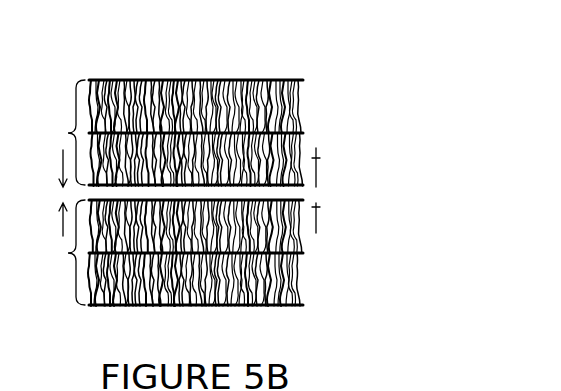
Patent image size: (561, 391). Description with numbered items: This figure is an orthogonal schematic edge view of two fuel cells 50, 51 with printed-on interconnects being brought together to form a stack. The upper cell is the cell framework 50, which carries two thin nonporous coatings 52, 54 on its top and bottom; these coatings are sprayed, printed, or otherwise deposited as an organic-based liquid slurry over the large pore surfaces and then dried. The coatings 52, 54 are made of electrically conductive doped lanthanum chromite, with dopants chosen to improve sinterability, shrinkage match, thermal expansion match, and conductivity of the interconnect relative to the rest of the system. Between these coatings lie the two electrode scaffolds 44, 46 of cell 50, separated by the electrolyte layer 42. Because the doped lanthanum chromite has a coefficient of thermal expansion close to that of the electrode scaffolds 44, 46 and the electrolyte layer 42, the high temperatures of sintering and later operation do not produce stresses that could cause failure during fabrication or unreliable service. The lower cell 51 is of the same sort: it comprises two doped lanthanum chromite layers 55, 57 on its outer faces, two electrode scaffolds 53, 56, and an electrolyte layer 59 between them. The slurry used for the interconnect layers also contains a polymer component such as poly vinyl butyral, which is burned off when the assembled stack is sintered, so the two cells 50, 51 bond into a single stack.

The cell framework 50 is at (54, 133).
The cell 51 is at (54, 252).
The nonporous coating 52 is at (220, 78).
The electrode scaffold 44 is at (300, 108).
The electrolyte layer 42 is at (300, 133).
The electrode scaffold 46 is at (297, 164).
The nonporous coating 54 is at (303, 182).
The doped lanthanum chromite layer 55 is at (303, 203).
The electrode scaffold 53 is at (301, 238).
The electrolyte layer 59 is at (300, 252).
The electrode scaffold 56 is at (295, 273).
The doped lanthanum chromite layer 57 is at (300, 307).